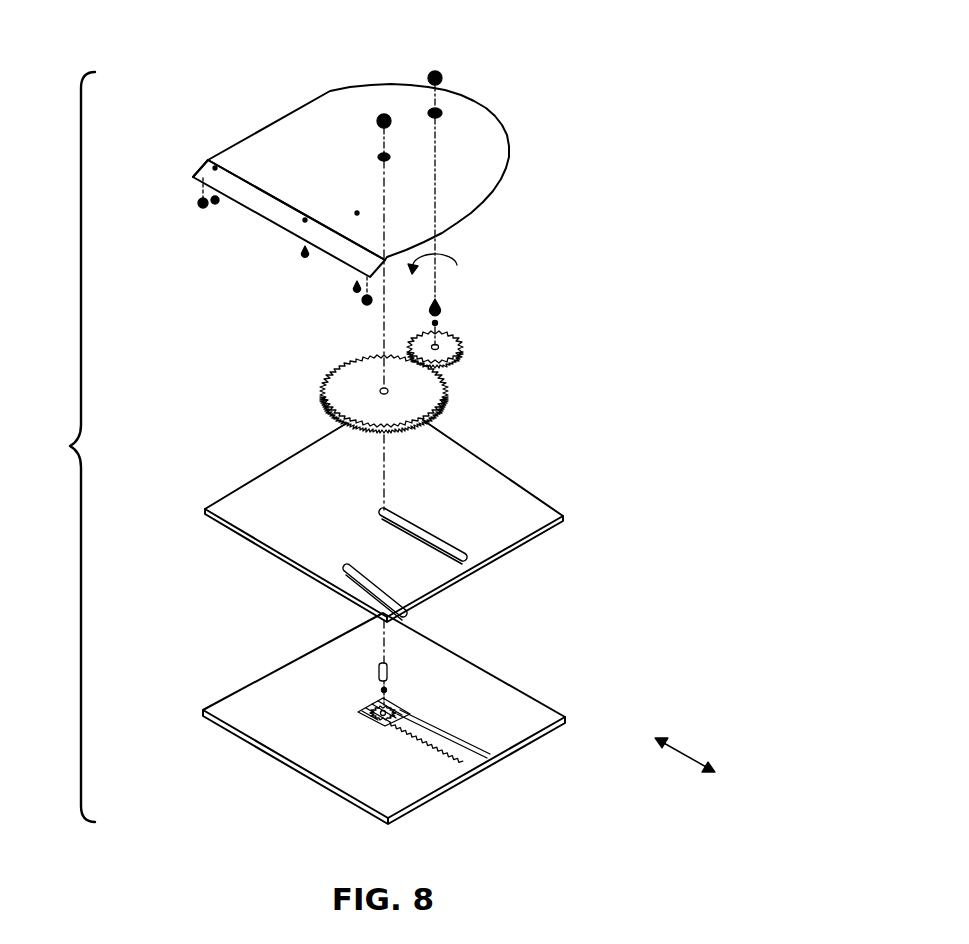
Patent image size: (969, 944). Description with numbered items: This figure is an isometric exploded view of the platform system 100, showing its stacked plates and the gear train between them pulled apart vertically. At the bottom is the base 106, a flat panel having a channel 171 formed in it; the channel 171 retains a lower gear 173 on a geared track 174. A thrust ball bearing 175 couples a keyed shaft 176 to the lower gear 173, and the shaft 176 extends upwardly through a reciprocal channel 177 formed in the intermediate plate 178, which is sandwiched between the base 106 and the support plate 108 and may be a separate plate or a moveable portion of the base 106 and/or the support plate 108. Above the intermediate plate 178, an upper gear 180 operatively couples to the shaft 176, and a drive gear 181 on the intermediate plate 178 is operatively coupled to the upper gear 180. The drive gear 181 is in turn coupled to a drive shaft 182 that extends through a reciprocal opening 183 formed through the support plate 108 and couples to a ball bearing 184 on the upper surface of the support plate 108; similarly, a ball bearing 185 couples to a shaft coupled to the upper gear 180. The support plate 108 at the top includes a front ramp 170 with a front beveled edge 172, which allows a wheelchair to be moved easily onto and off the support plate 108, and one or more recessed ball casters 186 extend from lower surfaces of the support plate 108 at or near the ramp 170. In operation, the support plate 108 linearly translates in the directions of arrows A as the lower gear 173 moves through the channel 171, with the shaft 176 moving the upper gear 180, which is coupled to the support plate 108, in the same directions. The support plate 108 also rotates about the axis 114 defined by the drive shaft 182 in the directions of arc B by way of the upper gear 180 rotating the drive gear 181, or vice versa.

The platform system 100 is at (52, 447).
The base 106 is at (515, 708).
The support plate 108 is at (322, 124).
The axis 114 is at (438, 281).
The front ramp 170 is at (205, 165).
The channel 171 is at (457, 755).
The front beveled edge 172 is at (245, 198).
The lower gear 173 is at (412, 717).
The geared track 174 is at (447, 760).
The thrust ball bearing 175 is at (380, 690).
The keyed shaft 176 is at (378, 672).
The reciprocal channel 177 is at (457, 548).
The intermediate plate 178 is at (540, 497).
The upper gear 180 is at (346, 388).
The drive gear 181 is at (448, 350).
The drive shaft 182 is at (446, 312).
The reciprocal opening 183 is at (442, 110).
The ball bearing 184 is at (441, 73).
The ball bearing 185 is at (385, 114).
The recessed ball casters 186 is at (200, 205).
The arrows A is at (685, 752).
The arc B is at (459, 262).